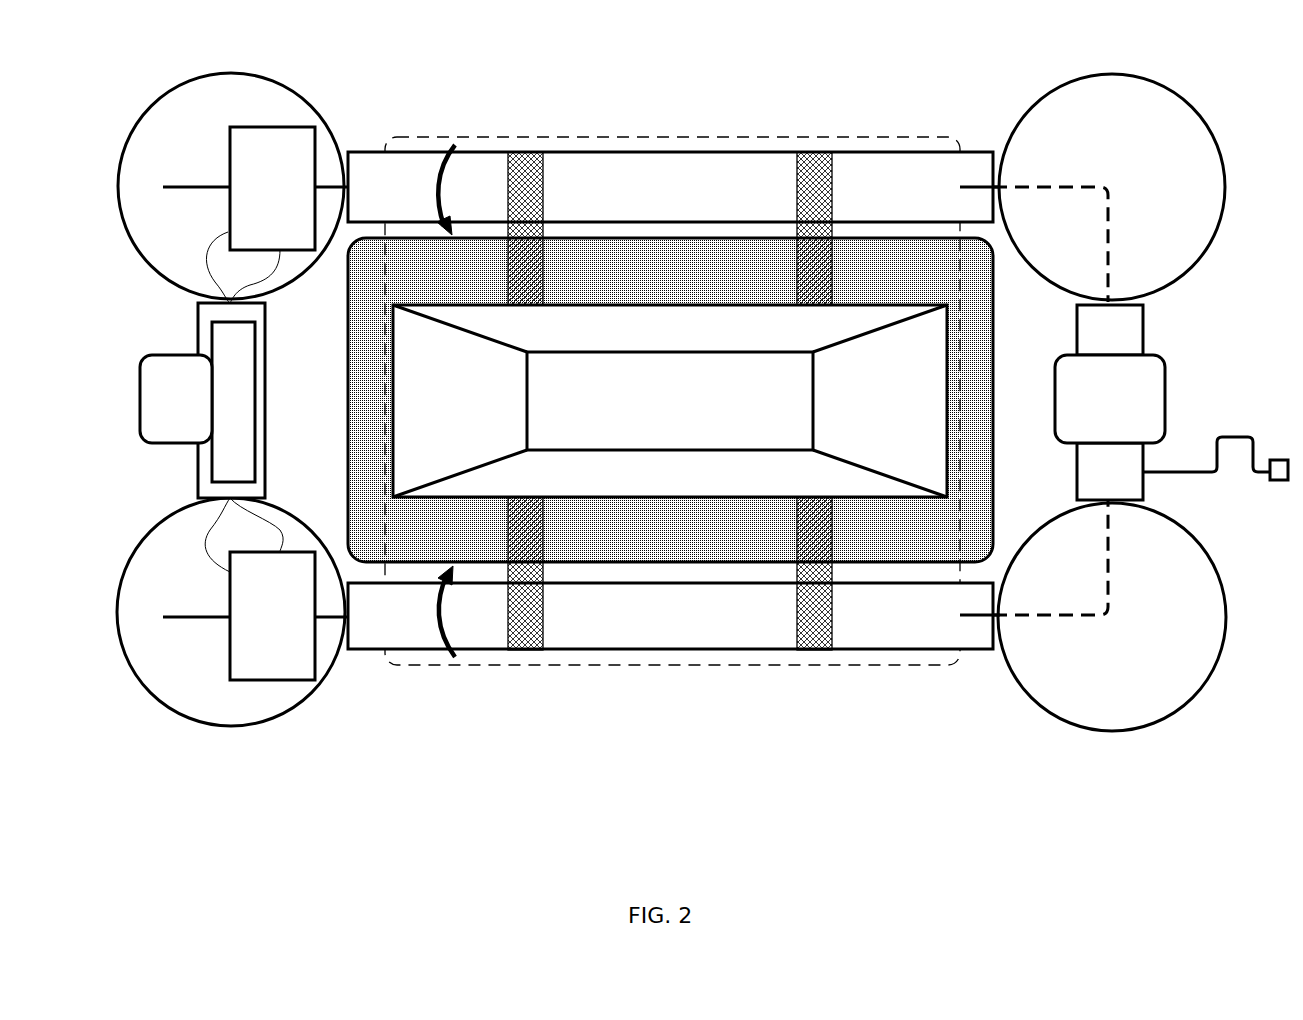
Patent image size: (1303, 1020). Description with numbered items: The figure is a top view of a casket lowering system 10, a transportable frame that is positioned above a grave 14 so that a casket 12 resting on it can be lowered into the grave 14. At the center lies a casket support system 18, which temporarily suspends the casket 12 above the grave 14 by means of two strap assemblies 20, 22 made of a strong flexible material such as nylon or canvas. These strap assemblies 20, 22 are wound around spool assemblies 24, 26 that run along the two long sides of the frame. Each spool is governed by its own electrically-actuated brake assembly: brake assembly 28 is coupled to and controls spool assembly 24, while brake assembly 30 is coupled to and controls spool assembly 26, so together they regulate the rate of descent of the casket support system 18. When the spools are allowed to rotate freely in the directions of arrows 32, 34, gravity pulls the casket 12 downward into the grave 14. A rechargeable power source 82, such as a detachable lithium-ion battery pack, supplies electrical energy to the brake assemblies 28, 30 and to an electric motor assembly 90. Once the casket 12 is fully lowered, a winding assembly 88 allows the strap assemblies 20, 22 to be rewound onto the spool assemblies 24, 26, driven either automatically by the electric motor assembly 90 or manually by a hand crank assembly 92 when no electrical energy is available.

The casket lowering system 10 is at (67, 28).
The casket 12 is at (670, 401).
The grave 14 is at (373, 352).
The casket support system 18 is at (707, 133).
The strap assembly 20 is at (522, 148).
The strap assembly 22 is at (815, 148).
The spool assembly 24 is at (674, 187).
The spool assembly 26 is at (674, 616).
The electrically-actuated brake assembly 28 is at (233, 188).
The electrically-actuated brake assembly 30 is at (232, 612).
The arrow 32 is at (455, 147).
The arrow 34 is at (452, 658).
The rechargeable power source 82 is at (202, 400).
The winding assembly 88 is at (1143, 333).
The electric motor assembly 90 is at (1110, 399).
The hand crank assembly 92 is at (1230, 437).